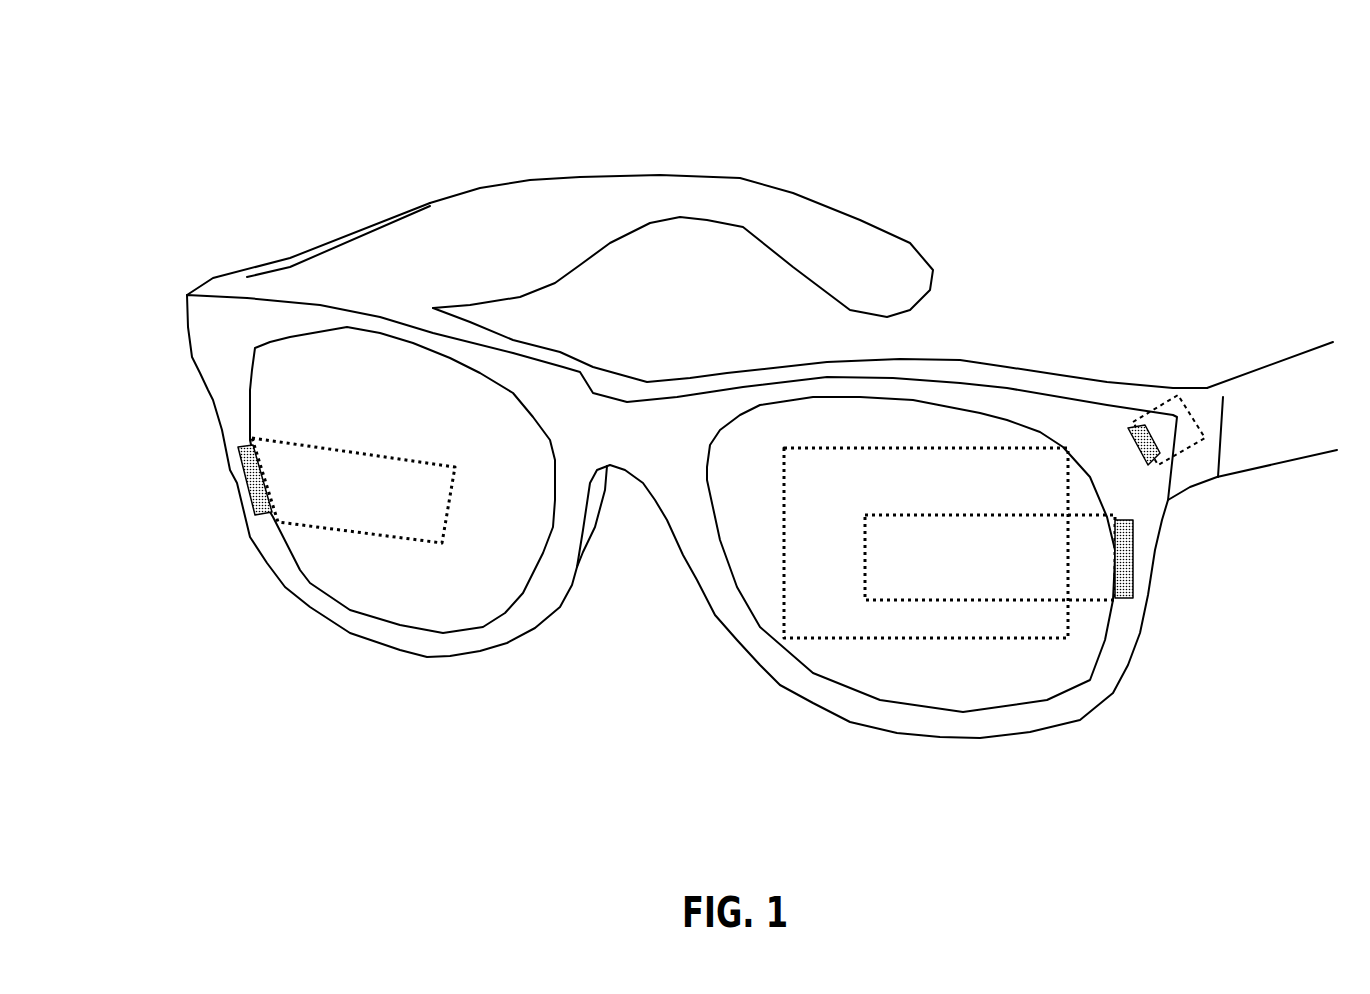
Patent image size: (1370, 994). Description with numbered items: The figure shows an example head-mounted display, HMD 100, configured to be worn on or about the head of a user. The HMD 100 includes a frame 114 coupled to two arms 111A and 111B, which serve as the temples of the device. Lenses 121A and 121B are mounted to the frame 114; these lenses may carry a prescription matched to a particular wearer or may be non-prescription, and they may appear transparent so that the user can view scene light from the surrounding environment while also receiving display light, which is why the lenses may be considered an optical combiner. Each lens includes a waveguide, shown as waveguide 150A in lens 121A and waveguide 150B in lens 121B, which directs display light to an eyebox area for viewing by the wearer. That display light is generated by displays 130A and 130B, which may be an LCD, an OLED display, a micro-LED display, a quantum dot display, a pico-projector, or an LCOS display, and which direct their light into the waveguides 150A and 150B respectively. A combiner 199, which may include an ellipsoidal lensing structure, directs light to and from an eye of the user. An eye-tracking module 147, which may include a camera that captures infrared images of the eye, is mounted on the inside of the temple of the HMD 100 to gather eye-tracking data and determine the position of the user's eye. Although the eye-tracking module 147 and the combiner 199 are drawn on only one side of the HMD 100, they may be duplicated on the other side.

The HMD 100 is at (1261, 42).
The arm 111A is at (541, 261).
The arm 111B is at (1294, 431).
The frame 114 is at (239, 341).
The lens 121A is at (521, 527).
The lens 121B is at (941, 442).
The display 130A is at (250, 487).
The display 130B is at (1133, 563).
The eye-tracking module 147 is at (1187, 405).
The waveguide 150A is at (283, 440).
The waveguide 150B is at (1108, 602).
The combiner 199 is at (782, 520).